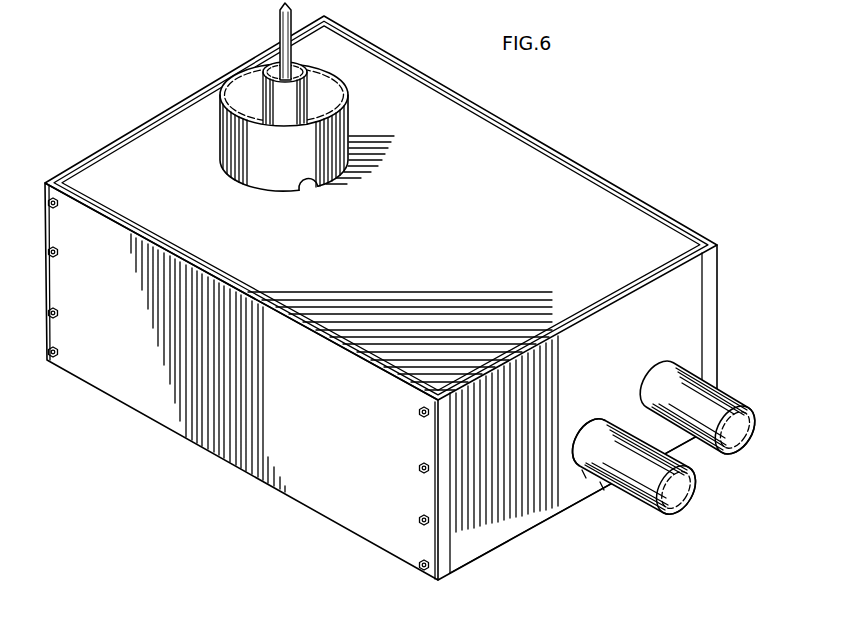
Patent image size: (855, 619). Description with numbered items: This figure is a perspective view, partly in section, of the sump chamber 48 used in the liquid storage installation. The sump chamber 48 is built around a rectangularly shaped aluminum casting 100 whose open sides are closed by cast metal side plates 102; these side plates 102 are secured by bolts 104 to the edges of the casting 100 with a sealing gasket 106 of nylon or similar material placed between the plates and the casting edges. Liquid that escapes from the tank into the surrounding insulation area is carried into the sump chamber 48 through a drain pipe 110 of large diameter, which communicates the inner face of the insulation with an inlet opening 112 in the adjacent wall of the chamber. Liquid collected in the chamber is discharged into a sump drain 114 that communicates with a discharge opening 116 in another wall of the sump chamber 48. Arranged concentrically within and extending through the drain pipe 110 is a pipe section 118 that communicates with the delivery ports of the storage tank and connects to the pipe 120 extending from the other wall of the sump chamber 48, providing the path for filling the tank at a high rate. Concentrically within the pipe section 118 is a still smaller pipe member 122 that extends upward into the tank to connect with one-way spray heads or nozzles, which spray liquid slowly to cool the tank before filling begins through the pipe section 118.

The sump chamber 48 is at (122, 122).
The casting 100 is at (93, 155).
The side plates 102 is at (522, 138).
The bolts 104 is at (58, 206).
The sealing gasket 106 is at (137, 222).
The drain pipe 110 is at (350, 140).
The inlet opening 112 is at (310, 190).
The sump drain 114 is at (637, 504).
The discharge opening 116 is at (598, 488).
The pipe section 118 is at (312, 98).
The pipe 120 is at (728, 395).
The pipe member 122 is at (282, 24).